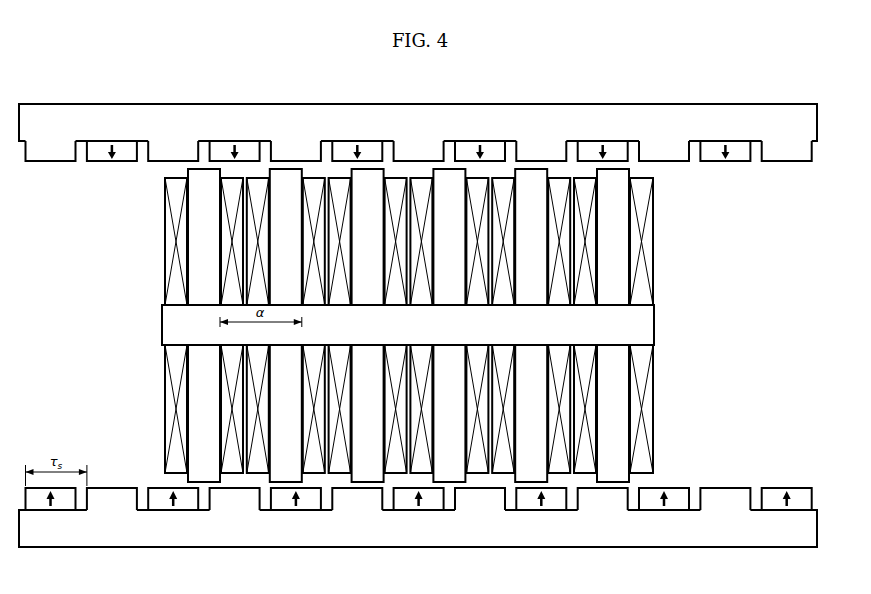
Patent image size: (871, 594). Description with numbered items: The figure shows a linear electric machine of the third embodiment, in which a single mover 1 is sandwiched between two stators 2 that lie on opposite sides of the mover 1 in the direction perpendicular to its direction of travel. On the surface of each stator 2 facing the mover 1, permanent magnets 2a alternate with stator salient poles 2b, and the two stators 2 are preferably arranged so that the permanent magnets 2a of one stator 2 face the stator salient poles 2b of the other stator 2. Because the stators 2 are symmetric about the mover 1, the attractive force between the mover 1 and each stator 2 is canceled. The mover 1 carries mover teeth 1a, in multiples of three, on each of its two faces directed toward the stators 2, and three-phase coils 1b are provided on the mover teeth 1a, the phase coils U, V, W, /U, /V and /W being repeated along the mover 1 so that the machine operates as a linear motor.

The mover 1 is at (400, 325).
The mover teeth 1a is at (620, 433).
The three-phase coils 1b is at (177, 410).
The stator 2 is at (421, 325).
The permanent magnets 2a is at (773, 500).
The stator salient poles 2b is at (713, 500).